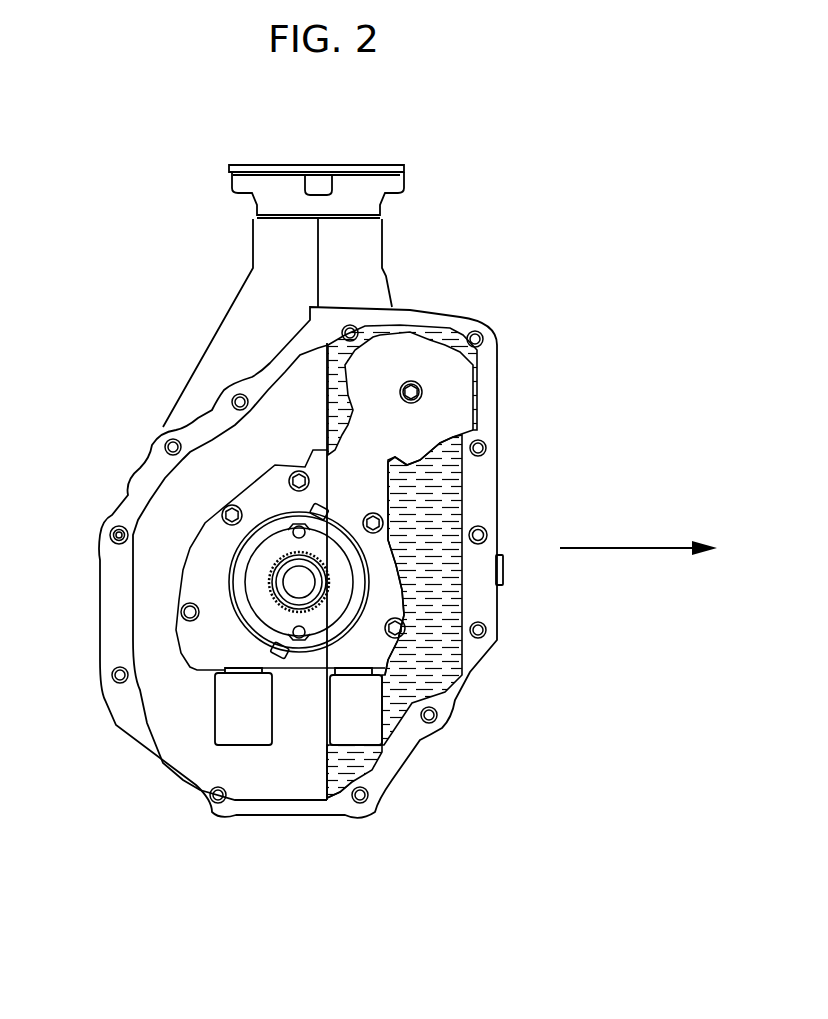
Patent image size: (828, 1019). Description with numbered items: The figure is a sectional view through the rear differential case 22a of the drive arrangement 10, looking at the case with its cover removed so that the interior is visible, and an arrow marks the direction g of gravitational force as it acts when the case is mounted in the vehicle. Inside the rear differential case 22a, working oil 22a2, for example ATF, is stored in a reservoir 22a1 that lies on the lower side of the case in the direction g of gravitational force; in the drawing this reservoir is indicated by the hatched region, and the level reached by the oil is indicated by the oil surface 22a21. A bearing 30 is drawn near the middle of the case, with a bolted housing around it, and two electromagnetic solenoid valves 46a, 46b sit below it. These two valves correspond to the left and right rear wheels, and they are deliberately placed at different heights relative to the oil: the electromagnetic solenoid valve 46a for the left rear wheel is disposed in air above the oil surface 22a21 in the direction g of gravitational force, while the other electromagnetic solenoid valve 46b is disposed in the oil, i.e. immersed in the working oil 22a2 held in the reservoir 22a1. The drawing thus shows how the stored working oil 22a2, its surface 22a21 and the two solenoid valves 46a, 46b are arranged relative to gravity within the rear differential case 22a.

The drive unit / housing assembly 10 is at (128, 393).
The rear differential case 22a is at (492, 462).
The reservoir 22a1 is at (447, 612).
The working oil 22a2 is at (362, 760).
The oil surface 22a21 is at (333, 773).
The bearing 30 is at (242, 560).
The electromagnetic solenoid valve 46a is at (223, 740).
The electromagnetic solenoid valve 46b is at (368, 728).
The direction of gravitational force g is at (630, 548).